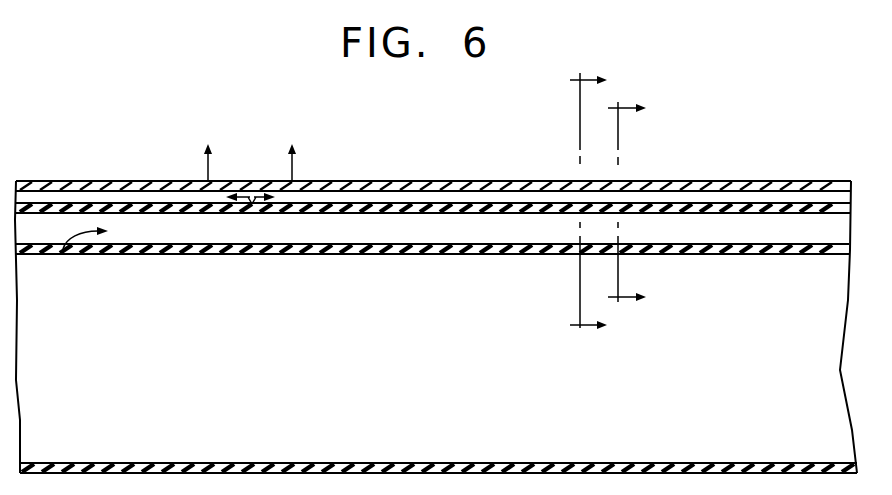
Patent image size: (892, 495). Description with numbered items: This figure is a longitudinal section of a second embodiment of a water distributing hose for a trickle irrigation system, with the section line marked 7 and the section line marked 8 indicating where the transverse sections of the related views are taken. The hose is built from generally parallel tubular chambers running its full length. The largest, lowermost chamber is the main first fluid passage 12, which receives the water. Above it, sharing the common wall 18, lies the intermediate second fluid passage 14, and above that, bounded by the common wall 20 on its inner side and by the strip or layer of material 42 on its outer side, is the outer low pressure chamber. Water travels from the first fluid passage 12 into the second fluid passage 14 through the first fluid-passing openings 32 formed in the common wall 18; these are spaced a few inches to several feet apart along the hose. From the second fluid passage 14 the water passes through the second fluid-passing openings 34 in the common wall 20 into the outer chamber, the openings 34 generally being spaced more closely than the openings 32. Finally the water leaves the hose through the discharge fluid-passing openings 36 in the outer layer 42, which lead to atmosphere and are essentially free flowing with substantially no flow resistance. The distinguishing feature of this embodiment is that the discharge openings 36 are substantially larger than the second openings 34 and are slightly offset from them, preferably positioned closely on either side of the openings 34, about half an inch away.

The first fluid passage 12 is at (532, 408).
The second fluid passage 14 is at (403, 234).
The common wall 18 is at (458, 255).
The common wall 20 is at (500, 203).
The strip or layer of material 42 is at (424, 182).
The discharge fluid-passing openings 36 is at (207, 182).
The second fluid-passing openings 34 is at (252, 204).
The first fluid-passing openings 32 is at (64, 250).
The section line 7- 7 is at (599, 203).
The section line 8- 8 is at (638, 203).